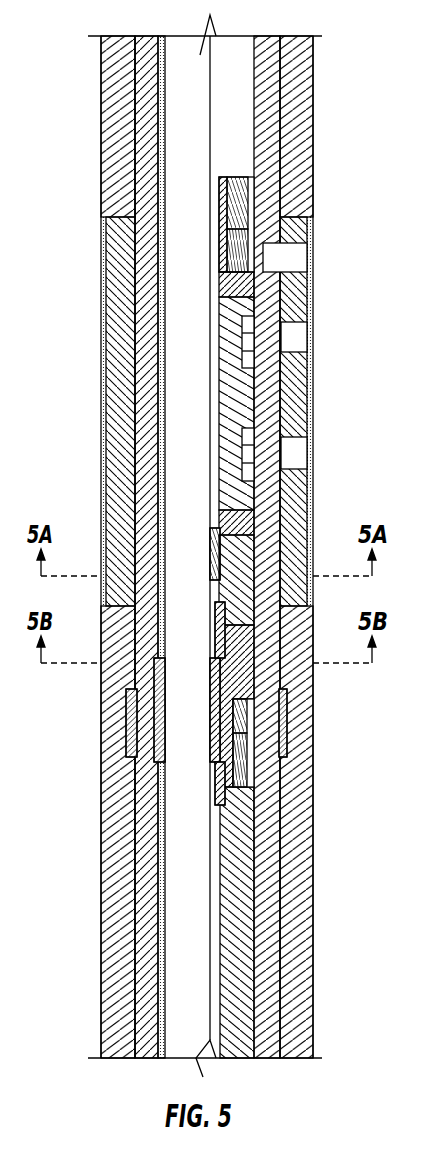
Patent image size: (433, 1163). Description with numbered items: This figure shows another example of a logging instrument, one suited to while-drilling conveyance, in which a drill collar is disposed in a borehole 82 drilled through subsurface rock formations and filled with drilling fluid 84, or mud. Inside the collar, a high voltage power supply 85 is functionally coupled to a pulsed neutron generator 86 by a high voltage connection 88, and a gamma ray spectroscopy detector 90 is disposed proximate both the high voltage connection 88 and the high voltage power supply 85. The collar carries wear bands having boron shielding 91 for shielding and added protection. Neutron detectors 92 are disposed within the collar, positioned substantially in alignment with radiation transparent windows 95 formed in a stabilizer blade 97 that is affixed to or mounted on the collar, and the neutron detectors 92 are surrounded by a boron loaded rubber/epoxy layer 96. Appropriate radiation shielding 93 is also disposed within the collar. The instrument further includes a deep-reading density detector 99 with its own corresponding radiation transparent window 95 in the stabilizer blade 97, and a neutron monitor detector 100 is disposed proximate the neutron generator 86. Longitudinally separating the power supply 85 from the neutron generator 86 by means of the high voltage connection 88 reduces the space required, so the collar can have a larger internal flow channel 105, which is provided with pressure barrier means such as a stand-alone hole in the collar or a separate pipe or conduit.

The borehole 82 is at (313, 852).
The drilling fluid 84 is at (112, 848).
The high voltage power supply 85 is at (227, 834).
The pulsed neutron generator 86 is at (227, 600).
The high voltage connection 88 is at (215, 655).
The gamma ray spectroscopy detector 90 is at (238, 715).
The boron shielding 91 is at (158, 730).
The neutron detectors 92 is at (239, 343).
The radiation shielding 93 is at (225, 284).
The radiation transparent windows 95 is at (303, 258).
The boron loaded rubber/epoxy layer 96 is at (225, 401).
The stabilizer blade 97 is at (115, 291).
The deep-reading density detector 99 is at (233, 253).
The neutron monitor detector 100 is at (215, 557).
The internal flow channel 105 is at (173, 913).